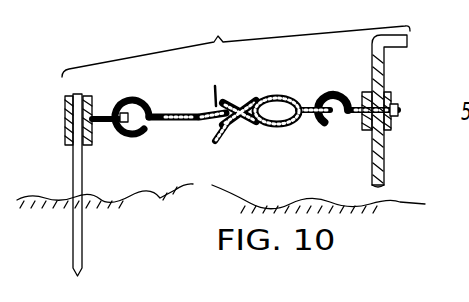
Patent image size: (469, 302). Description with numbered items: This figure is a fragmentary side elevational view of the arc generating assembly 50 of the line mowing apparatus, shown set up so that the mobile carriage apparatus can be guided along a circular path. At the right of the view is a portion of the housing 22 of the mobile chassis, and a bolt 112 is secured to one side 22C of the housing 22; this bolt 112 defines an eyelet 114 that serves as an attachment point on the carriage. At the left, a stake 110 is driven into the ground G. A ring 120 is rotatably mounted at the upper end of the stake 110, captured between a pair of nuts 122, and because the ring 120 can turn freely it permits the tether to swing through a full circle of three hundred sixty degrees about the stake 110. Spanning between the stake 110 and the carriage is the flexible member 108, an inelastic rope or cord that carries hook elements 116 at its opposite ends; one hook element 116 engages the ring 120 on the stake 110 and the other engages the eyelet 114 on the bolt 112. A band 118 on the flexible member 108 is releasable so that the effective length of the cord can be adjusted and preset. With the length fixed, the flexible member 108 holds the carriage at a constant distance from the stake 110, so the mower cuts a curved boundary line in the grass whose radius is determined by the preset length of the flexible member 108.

The arc generating assembly 50 is at (214, 35).
The housing 22 is at (411, 39).
The side of housing 22C is at (383, 168).
The stake 110 is at (82, 172).
The nuts 122 is at (65, 137).
The ring 120 is at (93, 105).
The hook elements 116 is at (136, 93).
The flexible member 108 is at (191, 96).
The band 118 is at (250, 138).
The eyelet 114 is at (353, 92).
The bolt 112 is at (393, 125).
The ground G is at (221, 194).